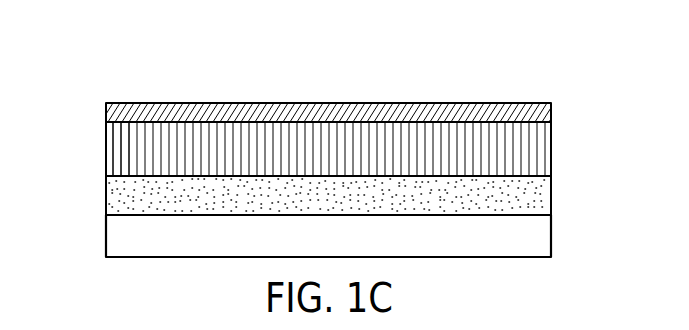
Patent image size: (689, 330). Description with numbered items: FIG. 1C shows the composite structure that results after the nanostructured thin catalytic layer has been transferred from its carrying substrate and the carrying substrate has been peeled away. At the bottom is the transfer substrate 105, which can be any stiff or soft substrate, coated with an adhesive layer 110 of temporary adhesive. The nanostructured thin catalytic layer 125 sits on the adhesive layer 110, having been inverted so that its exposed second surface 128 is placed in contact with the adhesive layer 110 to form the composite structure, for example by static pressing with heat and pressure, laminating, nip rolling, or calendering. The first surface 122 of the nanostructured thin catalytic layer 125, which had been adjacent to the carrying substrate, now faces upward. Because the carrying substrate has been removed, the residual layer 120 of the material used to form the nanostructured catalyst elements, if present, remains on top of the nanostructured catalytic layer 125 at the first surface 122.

The transfer substrate 105 is at (547, 237).
The adhesive layer 110 is at (547, 198).
The residual layer 120 is at (551, 113).
The first surface 122 is at (133, 121).
The nanostructured thin catalytic layer 125 is at (547, 152).
The second surface 128 is at (123, 174).